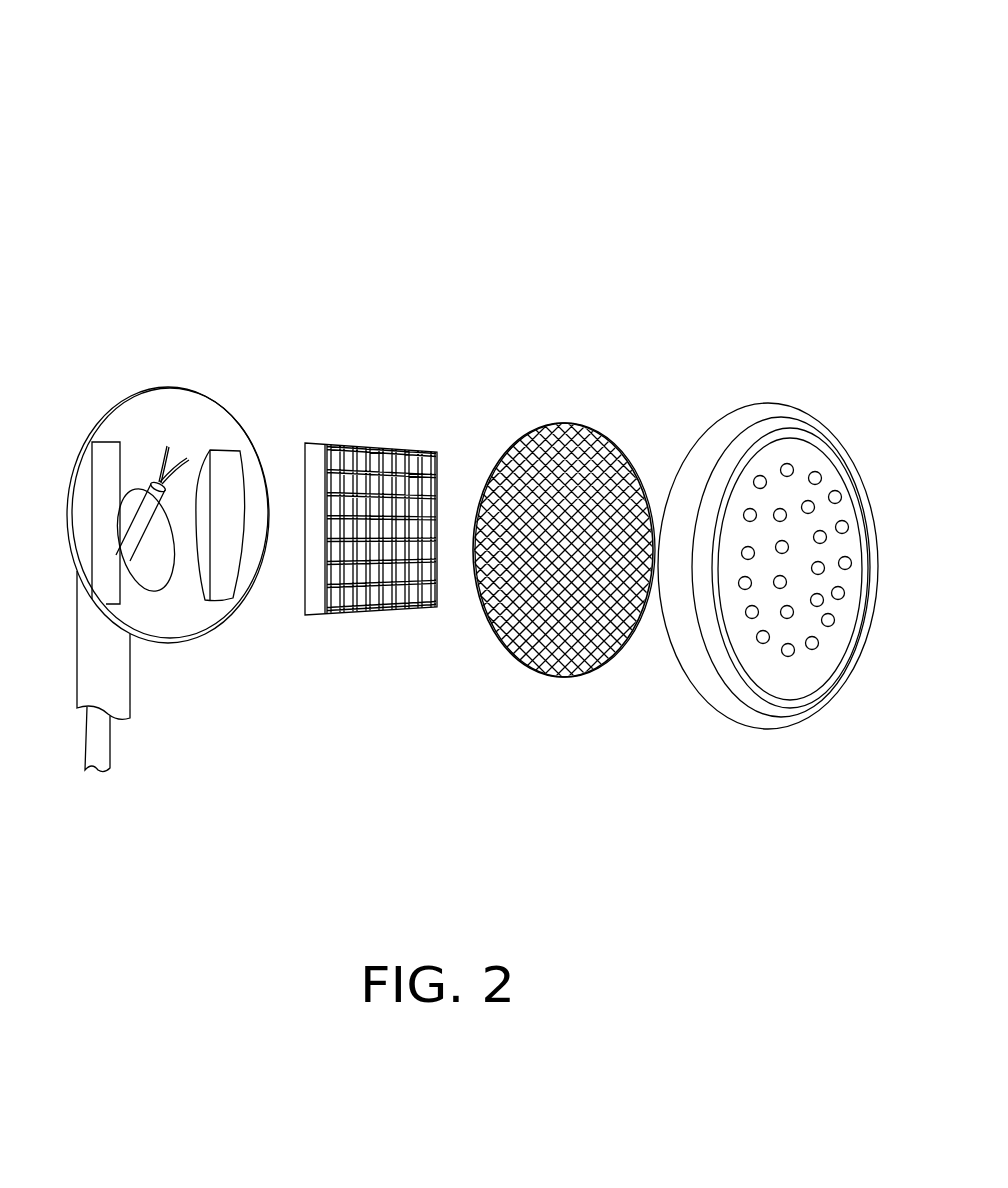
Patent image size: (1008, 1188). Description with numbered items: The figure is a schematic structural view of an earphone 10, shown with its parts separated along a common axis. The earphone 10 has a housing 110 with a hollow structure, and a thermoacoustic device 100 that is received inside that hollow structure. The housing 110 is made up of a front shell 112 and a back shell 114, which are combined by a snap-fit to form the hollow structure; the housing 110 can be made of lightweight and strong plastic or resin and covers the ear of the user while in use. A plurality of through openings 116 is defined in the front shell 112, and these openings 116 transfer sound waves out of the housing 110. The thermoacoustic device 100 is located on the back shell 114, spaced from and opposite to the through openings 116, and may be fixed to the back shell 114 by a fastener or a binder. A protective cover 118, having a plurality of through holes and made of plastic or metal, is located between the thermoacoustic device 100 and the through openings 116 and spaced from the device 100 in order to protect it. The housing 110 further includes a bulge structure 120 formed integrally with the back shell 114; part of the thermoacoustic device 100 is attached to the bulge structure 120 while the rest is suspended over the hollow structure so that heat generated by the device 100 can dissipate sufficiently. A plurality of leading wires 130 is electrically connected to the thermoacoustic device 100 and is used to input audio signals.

The earphone 10 is at (523, 74).
The thermoacoustic device 100 is at (362, 613).
The housing 110 is at (737, 286).
The front shell 112 is at (715, 435).
The back shell 114 is at (213, 400).
The through openings 116 is at (817, 472).
The protective cover 118 is at (562, 635).
The bulge structure 120 is at (107, 455).
The leading wires 130 is at (165, 442).